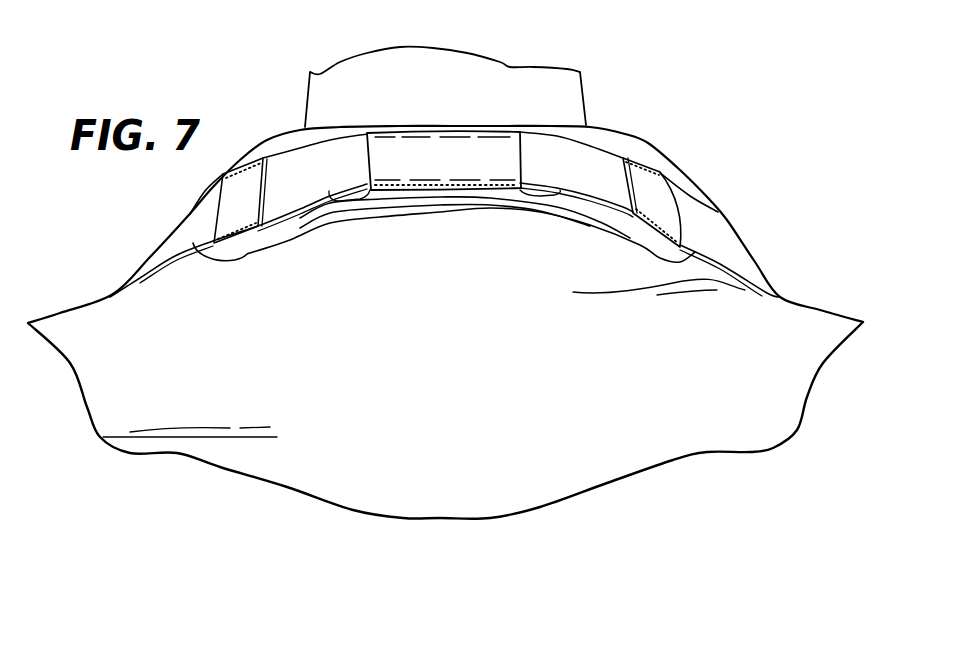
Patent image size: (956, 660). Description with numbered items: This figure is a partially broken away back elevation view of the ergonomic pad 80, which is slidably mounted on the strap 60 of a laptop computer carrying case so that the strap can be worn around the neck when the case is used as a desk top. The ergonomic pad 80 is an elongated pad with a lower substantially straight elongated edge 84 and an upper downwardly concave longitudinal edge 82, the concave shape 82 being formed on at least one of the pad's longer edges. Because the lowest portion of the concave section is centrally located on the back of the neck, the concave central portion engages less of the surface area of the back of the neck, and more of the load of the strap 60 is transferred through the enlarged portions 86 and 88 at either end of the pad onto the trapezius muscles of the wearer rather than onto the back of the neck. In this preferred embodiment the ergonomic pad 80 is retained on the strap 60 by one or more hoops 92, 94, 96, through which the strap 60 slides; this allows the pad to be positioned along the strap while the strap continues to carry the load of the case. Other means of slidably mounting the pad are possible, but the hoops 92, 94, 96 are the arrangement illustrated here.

The strap 60 is at (707, 212).
The ergonomic pad 80 is at (380, 222).
The upper downwardly concave longitudinal edge 82 is at (432, 127).
The lower substantially straight elongated edge 84 is at (492, 210).
The enlarged portion 86 is at (272, 142).
The enlarged portion 88 is at (600, 123).
The hoop 92 is at (232, 222).
The hoop 94 is at (443, 170).
The hoop 96 is at (650, 178).